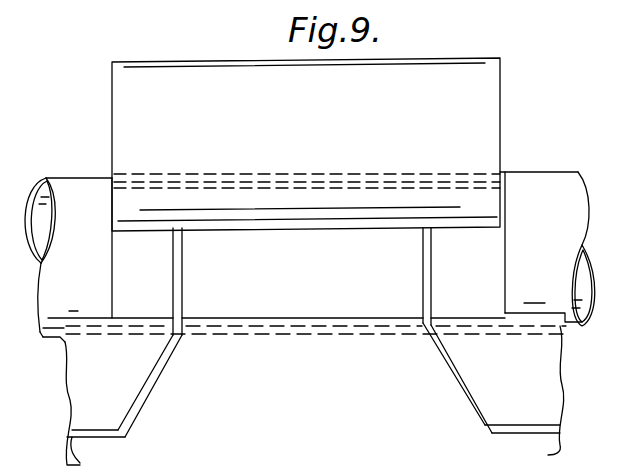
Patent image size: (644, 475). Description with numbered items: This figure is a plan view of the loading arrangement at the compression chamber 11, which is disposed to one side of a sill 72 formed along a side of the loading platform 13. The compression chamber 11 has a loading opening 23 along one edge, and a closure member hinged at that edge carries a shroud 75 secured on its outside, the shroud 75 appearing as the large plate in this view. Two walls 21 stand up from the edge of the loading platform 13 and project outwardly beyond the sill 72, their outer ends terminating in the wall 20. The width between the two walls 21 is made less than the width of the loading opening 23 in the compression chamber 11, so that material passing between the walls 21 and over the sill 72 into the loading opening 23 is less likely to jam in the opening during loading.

The compression chamber 11 is at (555, 187).
The loading platform 13 is at (542, 447).
The wall 20 is at (312, 228).
The walls 21 is at (176, 292).
The loading opening 23 is at (352, 248).
The sill 72 is at (368, 318).
The shroud 75 is at (468, 106).